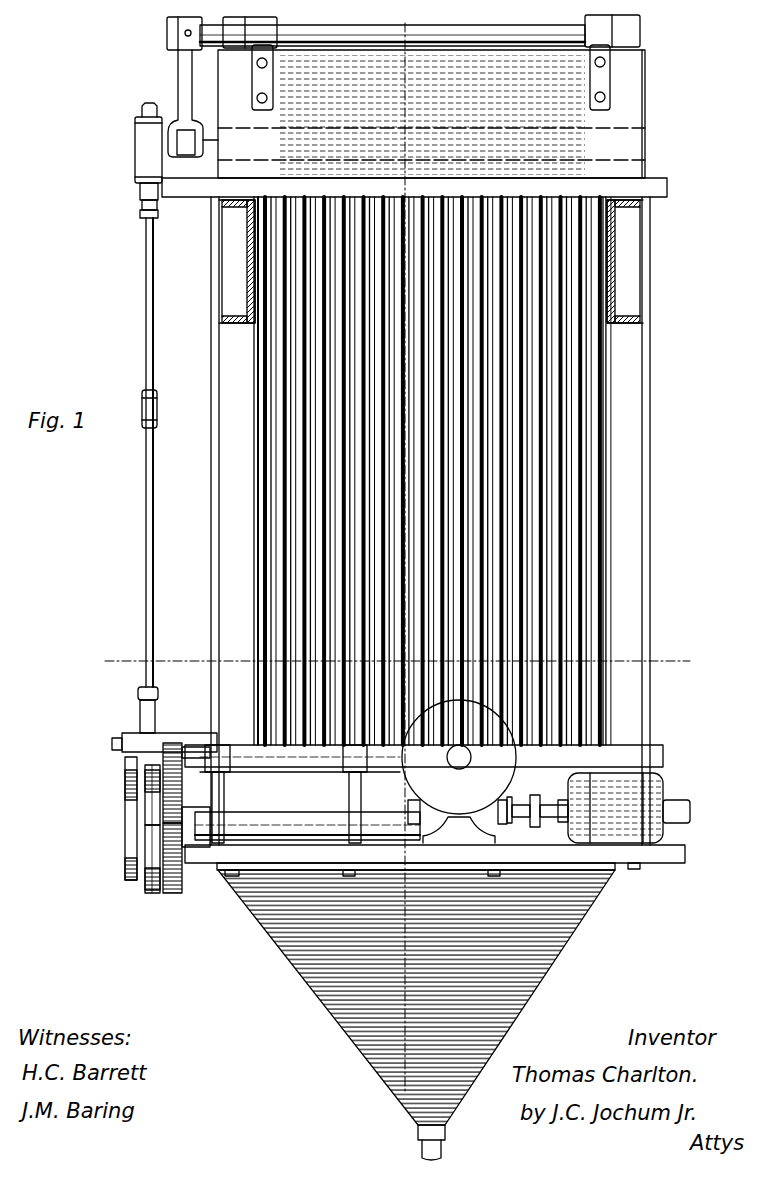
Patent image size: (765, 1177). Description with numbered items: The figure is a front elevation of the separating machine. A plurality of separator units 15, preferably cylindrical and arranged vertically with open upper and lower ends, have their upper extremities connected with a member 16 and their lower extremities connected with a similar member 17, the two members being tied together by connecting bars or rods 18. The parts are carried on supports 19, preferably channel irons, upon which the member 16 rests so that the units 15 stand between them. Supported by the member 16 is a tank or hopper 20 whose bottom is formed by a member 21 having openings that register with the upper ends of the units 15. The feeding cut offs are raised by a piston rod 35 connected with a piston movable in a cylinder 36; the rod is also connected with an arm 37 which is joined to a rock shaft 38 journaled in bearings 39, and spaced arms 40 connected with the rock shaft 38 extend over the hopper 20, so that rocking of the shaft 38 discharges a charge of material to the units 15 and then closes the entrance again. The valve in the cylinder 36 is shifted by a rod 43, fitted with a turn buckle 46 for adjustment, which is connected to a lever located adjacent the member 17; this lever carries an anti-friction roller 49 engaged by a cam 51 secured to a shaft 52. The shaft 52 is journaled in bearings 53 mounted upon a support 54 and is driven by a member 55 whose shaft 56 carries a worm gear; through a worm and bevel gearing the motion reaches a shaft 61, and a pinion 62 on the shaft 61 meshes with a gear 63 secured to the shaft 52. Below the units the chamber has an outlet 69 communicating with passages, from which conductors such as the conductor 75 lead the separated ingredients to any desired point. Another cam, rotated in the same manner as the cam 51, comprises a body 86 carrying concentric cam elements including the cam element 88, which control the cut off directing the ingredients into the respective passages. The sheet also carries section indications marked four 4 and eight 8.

The section line 4- 4 is at (420, 20).
The section line 8- 8 is at (105, 635).
The separator units 15 is at (575, 447).
The member 16 is at (665, 186).
The member 17 is at (665, 752).
The connecting bars or rods 18 is at (210, 350).
The supports 19 is at (247, 240).
The tank or hopper 20 is at (478, 62).
The member 21 is at (640, 166).
The piston rod or plunger 35 is at (148, 137).
The cylinder 36 is at (160, 170).
The arm 37 is at (177, 88).
The rock shaft 38 is at (392, 24).
The bearings 39 is at (274, 50).
The spaced arms 40 is at (258, 48).
The rod 43 is at (152, 452).
The turn buckle 46 is at (162, 400).
The anti-friction roller 49 is at (128, 768).
The cam 51 is at (190, 803).
The shaft 52 is at (284, 822).
The bearings 53 is at (224, 808).
The support 54 is at (459, 771).
The member 55 is at (630, 792).
The shaft 56 is at (518, 806).
The shaft 61 is at (312, 760).
The pinion 62 is at (172, 745).
The gear 63 is at (180, 893).
The outlet 69 is at (545, 958).
The conductor 75 is at (420, 1150).
The body 86 is at (147, 822).
The cam element 88 is at (150, 893).